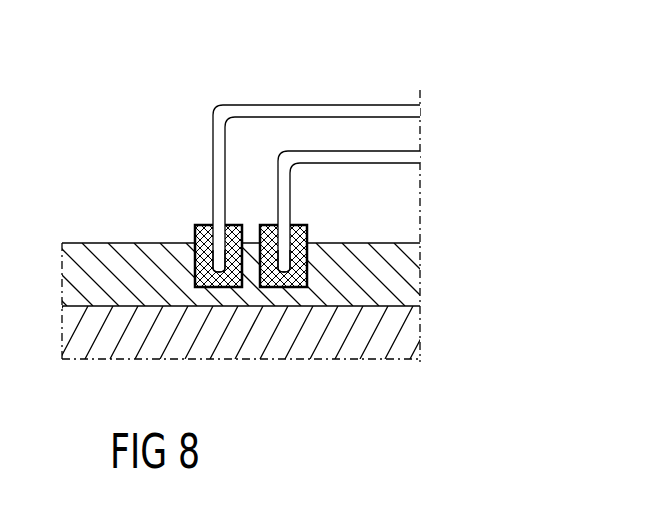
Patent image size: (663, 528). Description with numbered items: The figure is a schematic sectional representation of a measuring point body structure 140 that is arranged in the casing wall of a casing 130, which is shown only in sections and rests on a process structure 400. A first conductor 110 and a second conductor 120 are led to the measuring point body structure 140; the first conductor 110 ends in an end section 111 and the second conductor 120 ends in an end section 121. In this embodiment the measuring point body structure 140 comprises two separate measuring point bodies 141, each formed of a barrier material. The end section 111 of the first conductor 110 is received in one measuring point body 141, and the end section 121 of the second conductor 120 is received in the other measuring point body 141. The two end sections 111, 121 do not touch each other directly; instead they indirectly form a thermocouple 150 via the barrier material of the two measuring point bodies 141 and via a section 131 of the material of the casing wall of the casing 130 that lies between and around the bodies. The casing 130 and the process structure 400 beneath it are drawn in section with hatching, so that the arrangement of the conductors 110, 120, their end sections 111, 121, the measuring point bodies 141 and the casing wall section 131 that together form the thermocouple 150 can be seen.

The measuring point body structure 140 is at (189, 95).
The first conductor 110 is at (420, 110).
The second conductor 120 is at (420, 158).
The thermocouple 150 is at (251, 232).
The measuring point body 141 is at (195, 236).
The casing 130 is at (420, 278).
The process structure 400 is at (420, 343).
The end section of the first conductor 111 is at (216, 278).
The section of the casing wall material 131 is at (250, 268).
The end section of the second conductor 121 is at (282, 268).